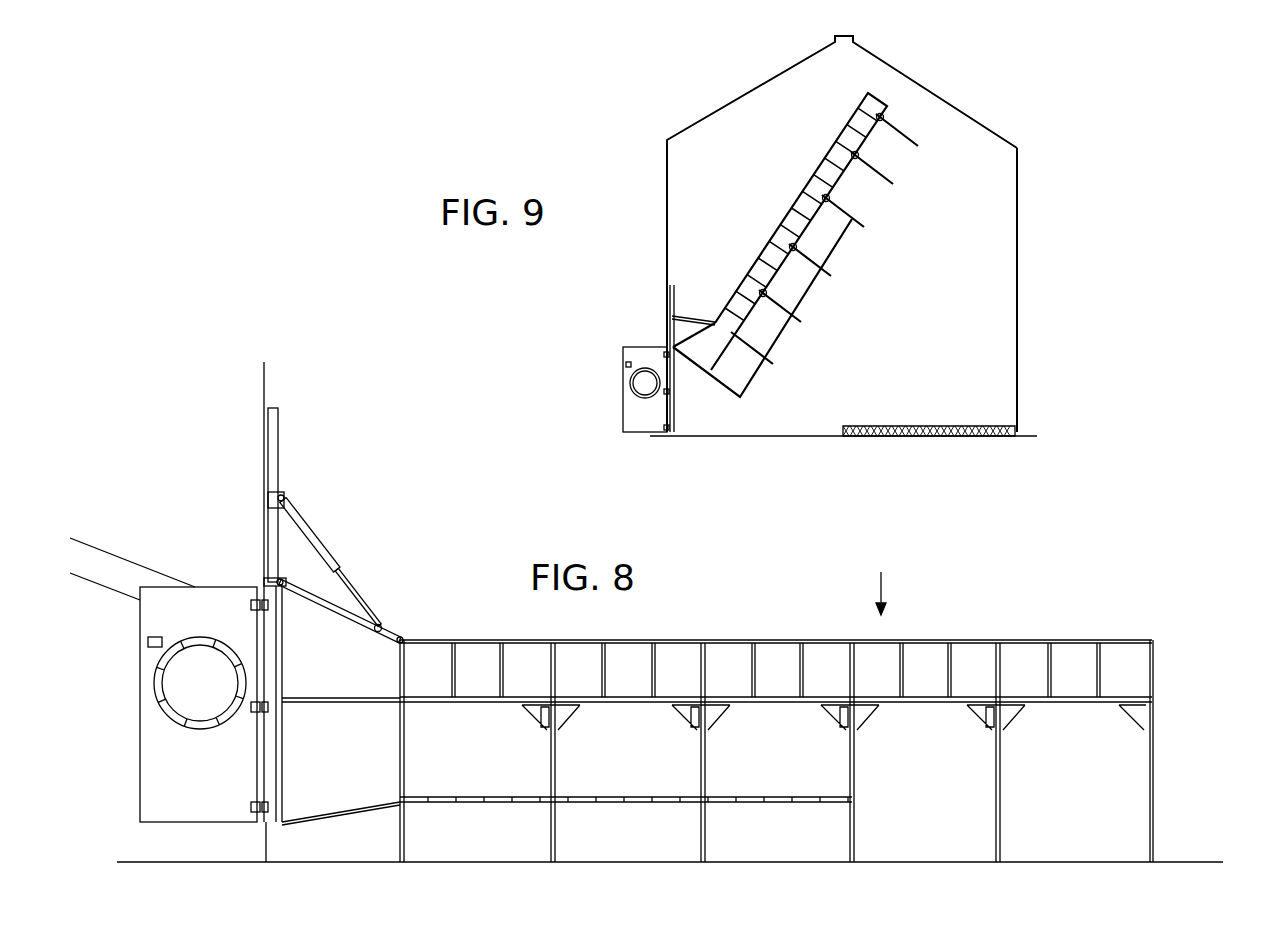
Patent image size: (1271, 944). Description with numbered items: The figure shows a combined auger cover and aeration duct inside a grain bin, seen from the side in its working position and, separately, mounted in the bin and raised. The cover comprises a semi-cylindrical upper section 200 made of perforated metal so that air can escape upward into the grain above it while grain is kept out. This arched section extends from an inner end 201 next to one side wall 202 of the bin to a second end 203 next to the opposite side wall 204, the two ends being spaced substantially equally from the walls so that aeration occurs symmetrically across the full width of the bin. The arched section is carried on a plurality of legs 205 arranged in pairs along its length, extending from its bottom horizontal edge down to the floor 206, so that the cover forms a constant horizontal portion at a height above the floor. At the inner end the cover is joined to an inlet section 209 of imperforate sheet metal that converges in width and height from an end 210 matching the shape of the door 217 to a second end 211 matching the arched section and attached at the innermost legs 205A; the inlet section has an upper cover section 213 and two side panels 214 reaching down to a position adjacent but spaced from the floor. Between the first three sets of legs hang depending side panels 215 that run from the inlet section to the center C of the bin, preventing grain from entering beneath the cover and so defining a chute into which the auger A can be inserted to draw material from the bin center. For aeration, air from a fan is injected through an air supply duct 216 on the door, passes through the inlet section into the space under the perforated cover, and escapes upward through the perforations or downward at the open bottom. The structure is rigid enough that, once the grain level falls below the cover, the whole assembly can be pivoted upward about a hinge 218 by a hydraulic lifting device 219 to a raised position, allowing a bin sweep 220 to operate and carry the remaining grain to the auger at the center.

In FIG. 8, the semi-cylindrical upper section 200 is at (728, 658).
In FIG. 8, the inner end 201 is at (397, 640).
In FIG. 9, the side wall 202 is at (667, 222).
In FIG. 8, the second end 203 is at (1152, 638).
In FIG. 9, the opposite side wall 204 is at (1017, 284).
In FIG. 8, the legs 205 is at (1147, 773).
In FIG. 8, the innermost legs 205A is at (403, 826).
In FIG. 8, the floor 206 is at (923, 860).
In FIG. 8, the inlet section 209 is at (327, 620).
In FIG. 8, the end 210 is at (287, 663).
In FIG. 8, the second end 211 is at (403, 742).
In FIG. 8, the upper cover section 213 is at (372, 626).
In FIG. 8, the side panels 214 is at (352, 790).
In FIG. 8, the depending side panels 215 is at (735, 762).
In FIG. 8, the air supply duct 216 is at (192, 640).
In FIG. 8, the door 217 is at (158, 746).
In FIG. 8, the hinge 218 is at (305, 528).
In FIG. 8, the hydraulic lifting device 219 is at (292, 582).
In FIG. 9, the bin sweep 220 is at (927, 431).
In FIG. 8, the auger A is at (118, 563).
In FIG. 8, the center C is at (881, 578).